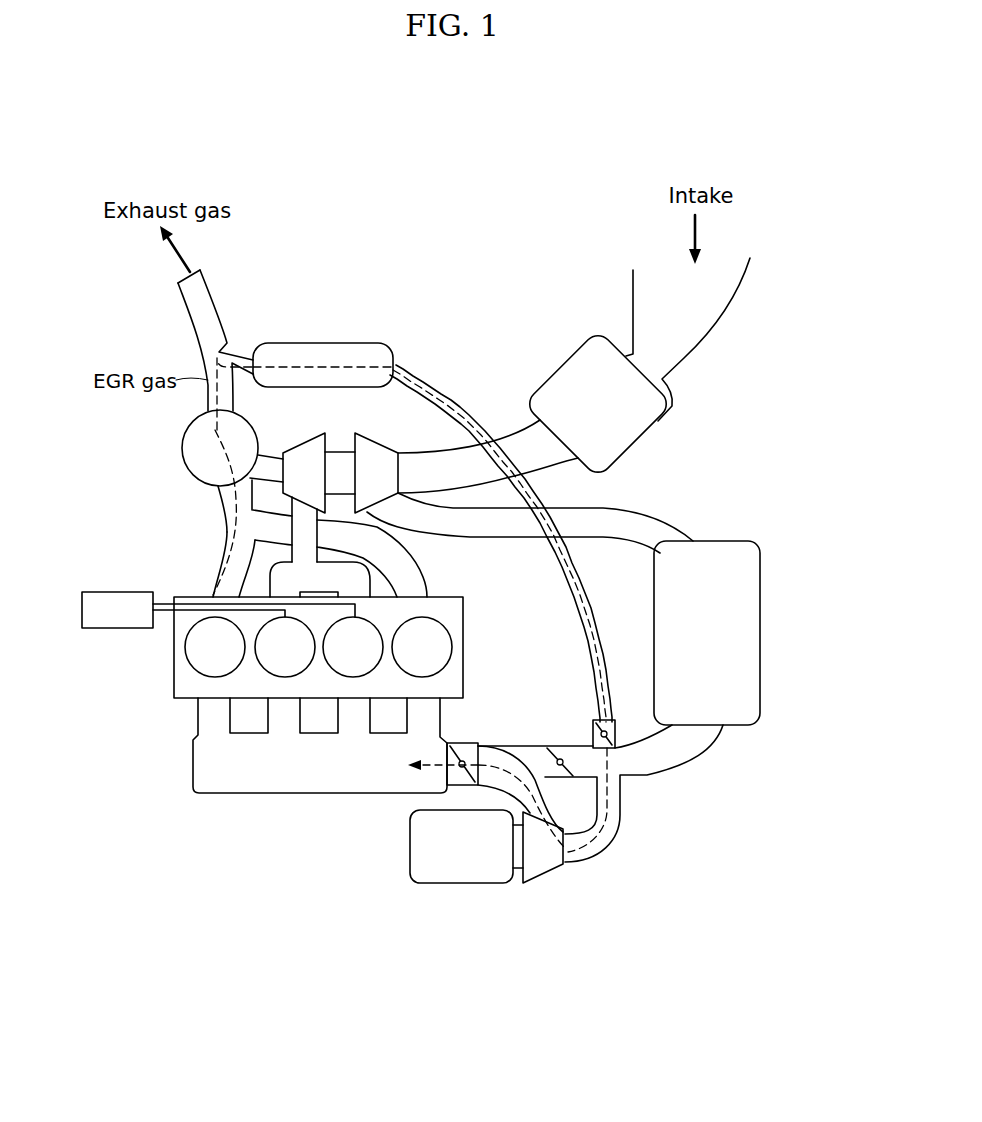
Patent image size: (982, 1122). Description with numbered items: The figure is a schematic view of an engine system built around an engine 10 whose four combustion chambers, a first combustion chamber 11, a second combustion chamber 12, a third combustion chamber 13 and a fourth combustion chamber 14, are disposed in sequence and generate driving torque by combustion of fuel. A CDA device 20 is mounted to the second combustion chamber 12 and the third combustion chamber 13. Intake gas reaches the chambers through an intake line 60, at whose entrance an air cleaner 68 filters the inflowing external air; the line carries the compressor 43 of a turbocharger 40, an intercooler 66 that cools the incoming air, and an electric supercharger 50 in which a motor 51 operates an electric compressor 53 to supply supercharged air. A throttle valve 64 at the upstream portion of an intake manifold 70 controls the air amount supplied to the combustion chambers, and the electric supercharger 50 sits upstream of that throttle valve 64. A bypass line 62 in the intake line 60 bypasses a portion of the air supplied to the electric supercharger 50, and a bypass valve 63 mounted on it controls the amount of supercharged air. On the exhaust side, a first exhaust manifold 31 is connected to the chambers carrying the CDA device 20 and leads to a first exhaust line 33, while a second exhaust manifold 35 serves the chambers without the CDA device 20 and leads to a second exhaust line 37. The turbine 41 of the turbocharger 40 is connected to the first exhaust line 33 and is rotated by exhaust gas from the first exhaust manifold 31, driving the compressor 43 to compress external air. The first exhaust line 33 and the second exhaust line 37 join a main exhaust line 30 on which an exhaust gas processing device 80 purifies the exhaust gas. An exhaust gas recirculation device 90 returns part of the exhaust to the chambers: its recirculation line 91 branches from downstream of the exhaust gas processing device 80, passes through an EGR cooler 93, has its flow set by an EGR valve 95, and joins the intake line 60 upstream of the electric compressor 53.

The engine 10 is at (164, 689).
The first combustion chamber 11 is at (203, 676).
The second combustion chamber 12 is at (283, 677).
The third combustion chamber 13 is at (353, 677).
The fourth combustion chamber 14 is at (421, 678).
The CDA device 20 is at (115, 630).
The main exhaust line 30 is at (203, 297).
The first exhaust manifold 31 is at (282, 589).
The first exhaust line 33 is at (270, 453).
The second exhaust manifold 35 is at (224, 566).
The second exhaust line 37 is at (230, 507).
The turbocharger 40 is at (340, 392).
The turbine 41 is at (300, 451).
The compressor 43 is at (376, 443).
The electric supercharger 50 is at (486, 901).
The motor 51 is at (483, 885).
The electric compressor 53 is at (547, 873).
The intake line 60 is at (547, 467).
The bypass line 62 is at (518, 746).
The bypass valve 63 is at (552, 749).
The throttle valve 64 is at (468, 743).
The intercooler 66 is at (727, 540).
The air cleaner 68 is at (658, 416).
The intake manifold 70 is at (208, 796).
The exhaust gas processing device 80 is at (186, 428).
The exhaust gas recirculation device 90 is at (434, 495).
The recirculation line 91 is at (440, 386).
The EGR cooler 93 is at (383, 340).
The EGR valve 95 is at (598, 720).